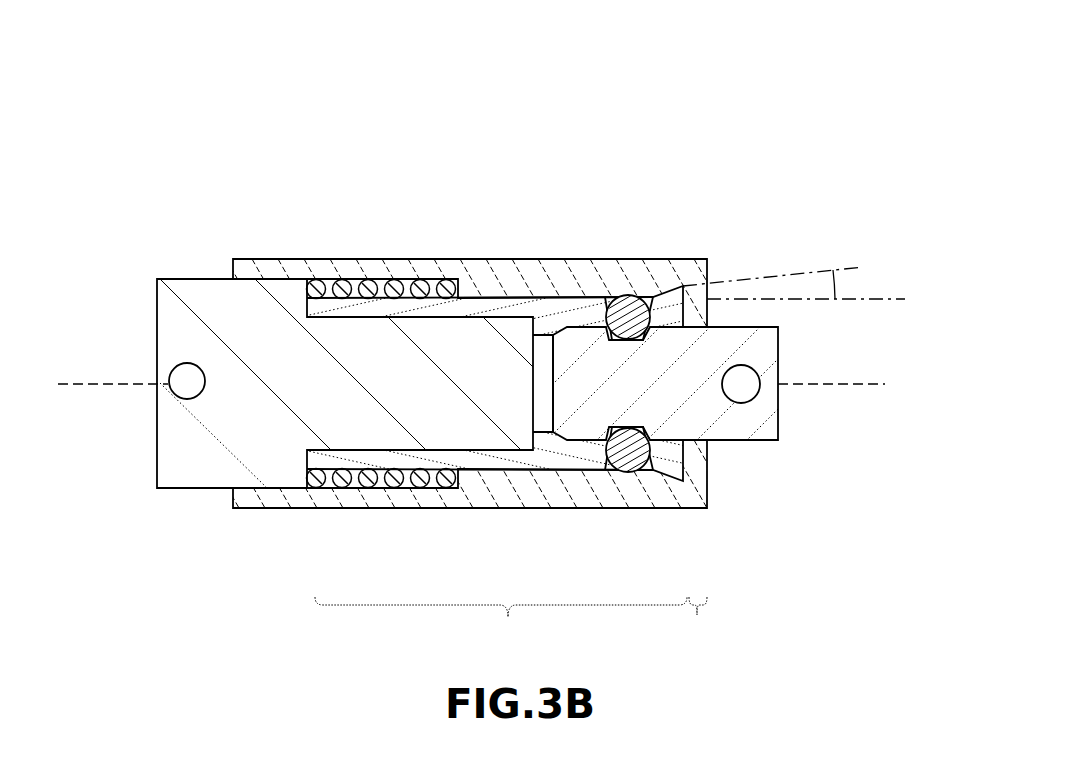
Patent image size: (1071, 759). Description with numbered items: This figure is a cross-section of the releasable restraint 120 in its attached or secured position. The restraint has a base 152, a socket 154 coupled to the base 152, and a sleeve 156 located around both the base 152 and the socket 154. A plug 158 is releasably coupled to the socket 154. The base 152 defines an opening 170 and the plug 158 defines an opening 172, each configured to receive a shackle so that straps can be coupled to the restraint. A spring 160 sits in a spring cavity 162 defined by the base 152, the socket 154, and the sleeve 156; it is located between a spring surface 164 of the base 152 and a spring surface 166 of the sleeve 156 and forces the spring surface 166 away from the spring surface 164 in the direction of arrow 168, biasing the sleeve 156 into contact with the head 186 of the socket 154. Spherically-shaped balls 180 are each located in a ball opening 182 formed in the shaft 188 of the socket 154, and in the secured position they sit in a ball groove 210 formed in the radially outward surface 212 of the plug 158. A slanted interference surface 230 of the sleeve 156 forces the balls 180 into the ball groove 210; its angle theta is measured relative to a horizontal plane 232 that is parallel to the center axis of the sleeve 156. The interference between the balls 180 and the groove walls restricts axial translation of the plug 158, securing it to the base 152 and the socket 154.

The releasable restraint 120 is at (330, 146).
The base 152 is at (359, 331).
The socket 154 is at (690, 492).
The sleeve 156 is at (565, 278).
The plug 158 is at (678, 400).
The spring 160 is at (393, 278).
The spring cavity 162 is at (373, 232).
The spring surface 164 is at (336, 490).
The spring surface 166 is at (387, 525).
The arrow 168 is at (838, 183).
The opening 170 is at (180, 392).
The opening 172 is at (742, 394).
The balls 180 is at (628, 318).
The ball opening 182 is at (601, 476).
The head 186 is at (697, 621).
The shaft 188 is at (501, 623).
The ball groove 210 is at (604, 428).
The radially outward surface 212 is at (757, 441).
The interference surface 230 is at (655, 468).
The horizontal plane 232 is at (893, 297).